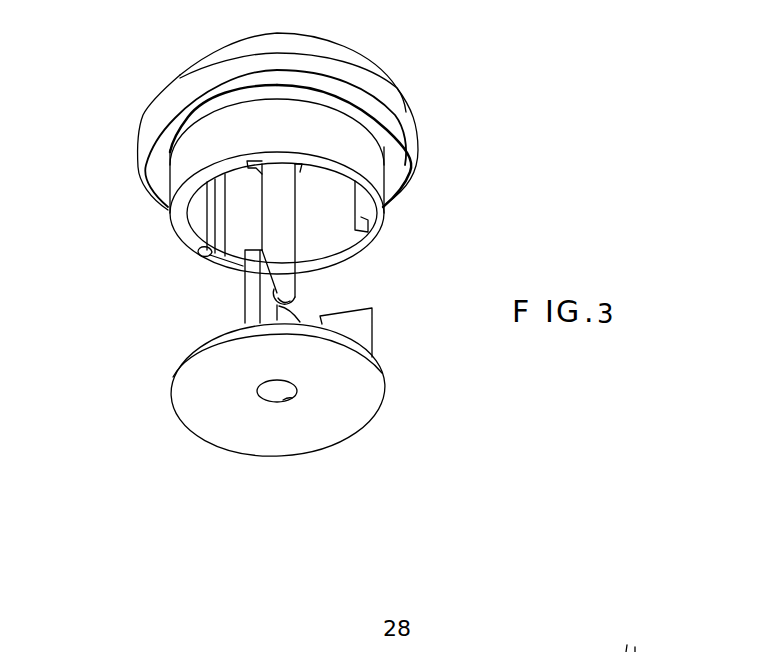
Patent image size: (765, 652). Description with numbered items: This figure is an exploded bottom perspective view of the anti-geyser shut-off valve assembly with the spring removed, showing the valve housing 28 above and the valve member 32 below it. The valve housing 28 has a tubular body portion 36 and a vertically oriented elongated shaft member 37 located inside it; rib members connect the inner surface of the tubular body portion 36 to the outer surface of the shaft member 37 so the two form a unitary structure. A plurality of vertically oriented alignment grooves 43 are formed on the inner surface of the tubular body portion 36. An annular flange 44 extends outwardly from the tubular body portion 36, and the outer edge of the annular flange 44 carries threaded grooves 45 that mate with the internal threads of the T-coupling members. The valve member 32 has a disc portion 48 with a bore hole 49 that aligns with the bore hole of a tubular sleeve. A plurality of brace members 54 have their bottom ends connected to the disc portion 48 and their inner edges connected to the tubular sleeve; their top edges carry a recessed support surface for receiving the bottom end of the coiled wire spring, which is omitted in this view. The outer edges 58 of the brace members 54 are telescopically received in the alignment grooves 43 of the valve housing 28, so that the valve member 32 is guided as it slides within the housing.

The valve housing 28 is at (429, 140).
The valve member 32 is at (175, 416).
The tubular body portion 36 is at (283, 140).
The shaft member 37 is at (277, 207).
The alignment grooves 43 is at (213, 267).
The annular flange 44 is at (160, 158).
The threaded grooves 45 is at (148, 113).
The disc portion 48 is at (352, 398).
The bore hole 49 is at (287, 398).
The brace members 54 is at (265, 308).
The outer edges 58 is at (245, 265).